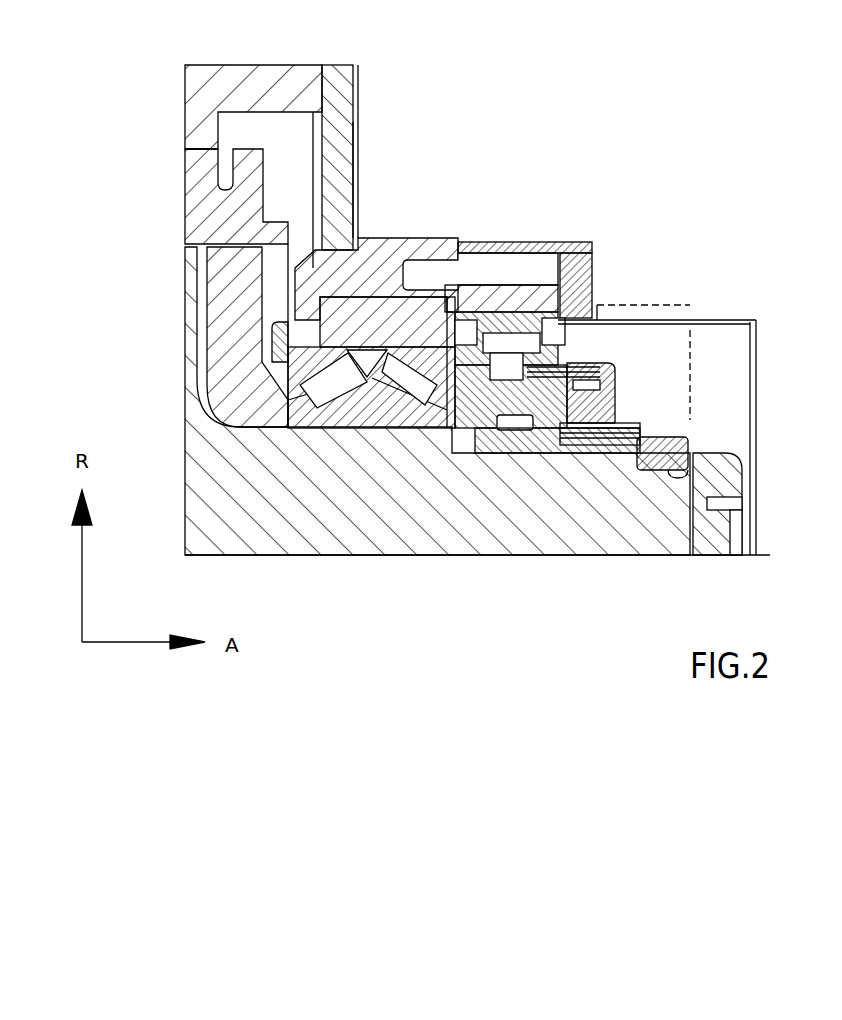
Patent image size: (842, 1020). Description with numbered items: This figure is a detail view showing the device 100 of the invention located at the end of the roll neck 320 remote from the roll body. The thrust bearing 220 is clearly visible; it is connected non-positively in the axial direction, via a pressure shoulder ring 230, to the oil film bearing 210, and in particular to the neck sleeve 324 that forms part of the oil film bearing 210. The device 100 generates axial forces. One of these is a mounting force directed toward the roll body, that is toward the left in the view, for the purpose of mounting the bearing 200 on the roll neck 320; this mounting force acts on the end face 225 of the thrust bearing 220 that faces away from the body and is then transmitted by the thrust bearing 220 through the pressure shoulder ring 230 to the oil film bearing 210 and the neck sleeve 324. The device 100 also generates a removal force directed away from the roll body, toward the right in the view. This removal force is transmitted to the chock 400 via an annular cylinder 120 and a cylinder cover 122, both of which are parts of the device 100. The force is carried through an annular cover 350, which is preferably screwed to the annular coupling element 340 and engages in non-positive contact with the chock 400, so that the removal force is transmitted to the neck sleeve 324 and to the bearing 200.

The device 100 is at (602, 335).
The annular cylinder 120 is at (463, 428).
The cylinder cover 122 is at (556, 312).
The bearing 200 is at (378, 180).
The oil film bearing 210 is at (185, 148).
The thrust bearing 220 is at (333, 428).
The end face 225 is at (432, 395).
The pressure shoulder ring 230 is at (218, 330).
The roll neck 320 is at (518, 512).
The neck sleeve 324 is at (186, 188).
The annular coupling element 340 is at (338, 112).
The annular cover 350 is at (523, 243).
The chock 400 is at (186, 86).